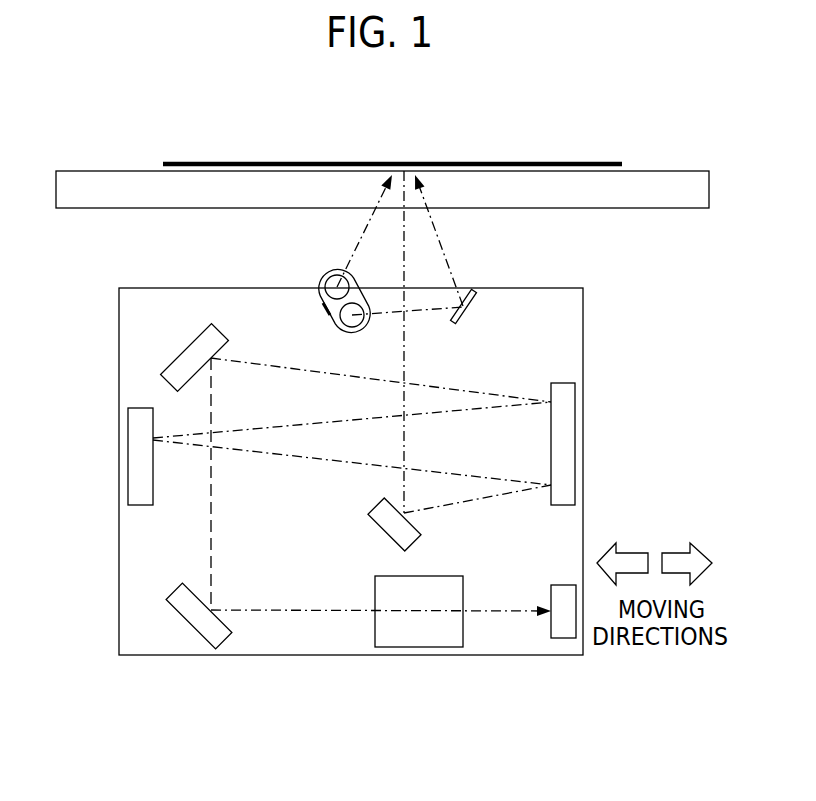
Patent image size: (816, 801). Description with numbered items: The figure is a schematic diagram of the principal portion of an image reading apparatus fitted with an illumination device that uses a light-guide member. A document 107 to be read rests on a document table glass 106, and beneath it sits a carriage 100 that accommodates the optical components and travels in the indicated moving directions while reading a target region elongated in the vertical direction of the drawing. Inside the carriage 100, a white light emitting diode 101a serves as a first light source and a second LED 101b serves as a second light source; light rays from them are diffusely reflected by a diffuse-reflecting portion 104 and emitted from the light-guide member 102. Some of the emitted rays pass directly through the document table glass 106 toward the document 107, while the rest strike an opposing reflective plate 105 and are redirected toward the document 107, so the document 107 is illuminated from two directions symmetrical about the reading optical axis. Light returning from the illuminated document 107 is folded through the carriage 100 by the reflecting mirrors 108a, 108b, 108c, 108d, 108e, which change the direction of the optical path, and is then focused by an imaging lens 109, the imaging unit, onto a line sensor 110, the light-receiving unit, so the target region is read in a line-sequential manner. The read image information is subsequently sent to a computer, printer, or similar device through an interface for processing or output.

The carriage 100 is at (585, 297).
The white light emitting diode (first light source) 101a is at (334, 276).
The LED (second light source) 101b is at (353, 321).
The light-guide member 102 is at (320, 283).
The diffuse-reflecting portion 104 is at (321, 309).
The opposing reflective plate 105 is at (466, 313).
The document table glass 106 is at (678, 183).
The document 107 is at (467, 162).
The reflecting mirror 108a is at (390, 525).
The reflecting mirror 108b is at (565, 437).
The reflecting mirror 108c is at (141, 497).
The reflecting mirror 108d is at (190, 357).
The reflecting mirror 108e is at (200, 620).
The imaging lens 109 is at (425, 635).
The line sensor 110 is at (563, 625).